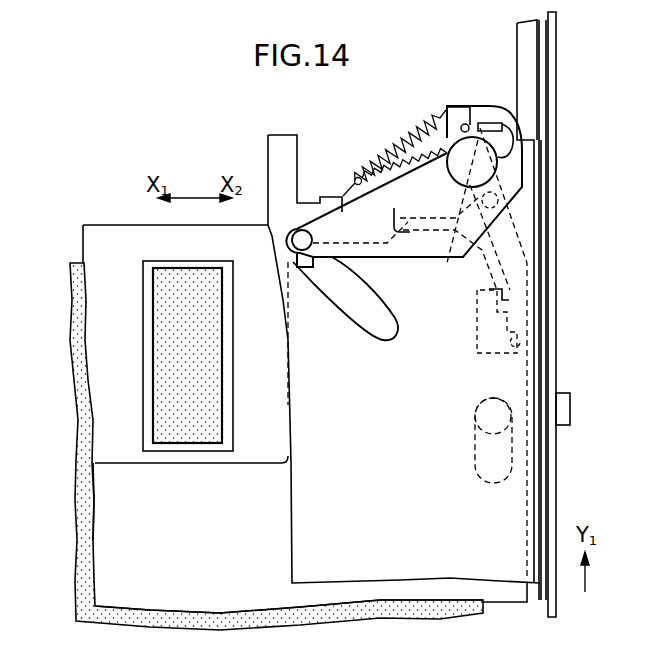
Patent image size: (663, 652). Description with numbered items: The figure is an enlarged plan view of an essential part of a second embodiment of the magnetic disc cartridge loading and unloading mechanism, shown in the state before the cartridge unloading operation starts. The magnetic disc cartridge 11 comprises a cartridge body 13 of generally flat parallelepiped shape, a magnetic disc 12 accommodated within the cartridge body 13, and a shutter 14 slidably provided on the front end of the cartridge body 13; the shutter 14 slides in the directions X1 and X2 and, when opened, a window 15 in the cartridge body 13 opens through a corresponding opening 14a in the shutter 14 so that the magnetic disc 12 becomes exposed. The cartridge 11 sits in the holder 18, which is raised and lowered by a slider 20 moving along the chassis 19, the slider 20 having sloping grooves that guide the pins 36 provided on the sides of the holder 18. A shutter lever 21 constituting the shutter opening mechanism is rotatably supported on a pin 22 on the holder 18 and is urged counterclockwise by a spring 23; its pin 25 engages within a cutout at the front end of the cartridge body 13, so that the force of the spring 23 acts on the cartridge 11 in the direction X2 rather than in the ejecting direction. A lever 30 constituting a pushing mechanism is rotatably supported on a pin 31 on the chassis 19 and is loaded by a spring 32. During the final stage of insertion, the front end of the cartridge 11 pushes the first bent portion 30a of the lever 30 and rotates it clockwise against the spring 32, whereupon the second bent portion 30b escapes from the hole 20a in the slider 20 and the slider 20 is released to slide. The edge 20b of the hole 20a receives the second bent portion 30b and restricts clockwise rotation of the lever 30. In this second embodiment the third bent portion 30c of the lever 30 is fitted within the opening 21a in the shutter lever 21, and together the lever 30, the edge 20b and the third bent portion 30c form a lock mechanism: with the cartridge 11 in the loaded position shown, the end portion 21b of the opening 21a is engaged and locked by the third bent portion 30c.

The magnetic disc cartridge 11 is at (495, 606).
The magnetic disc 12 is at (78, 335).
The cartridge body 13 is at (100, 506).
The shutter 14 is at (107, 230).
The opening 14a is at (143, 372).
The window 15 is at (158, 338).
The holder 18 is at (297, 487).
The chassis 19 is at (557, 238).
The slider 20 is at (520, 37).
The hole 20a is at (518, 342).
The edge 20b is at (520, 306).
The shutter lever 21 is at (403, 255).
The opening 21a is at (460, 108).
The end portion 21b is at (512, 126).
The pin 22 is at (492, 163).
The spring 23 is at (400, 138).
The pin 25 is at (292, 242).
The lever 30 is at (523, 208).
The first bent portion 30a is at (392, 222).
The second bent portion 30b is at (486, 305).
The third bent portion 30c is at (468, 124).
The pin 31 is at (458, 250).
The spring 32 is at (385, 154).
The pin 36 is at (571, 406).